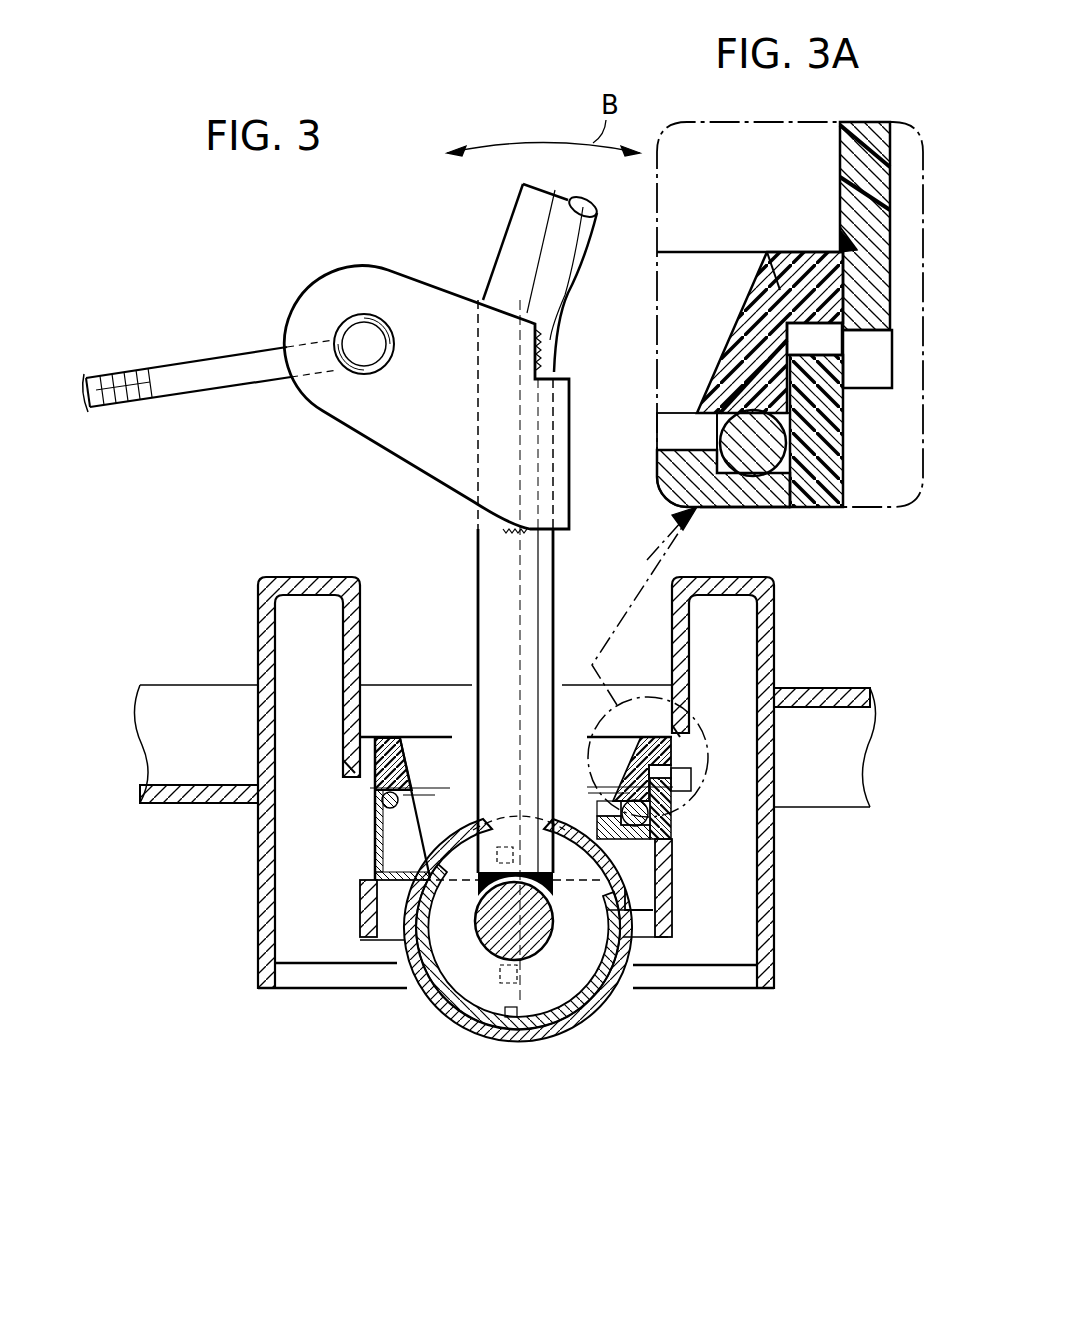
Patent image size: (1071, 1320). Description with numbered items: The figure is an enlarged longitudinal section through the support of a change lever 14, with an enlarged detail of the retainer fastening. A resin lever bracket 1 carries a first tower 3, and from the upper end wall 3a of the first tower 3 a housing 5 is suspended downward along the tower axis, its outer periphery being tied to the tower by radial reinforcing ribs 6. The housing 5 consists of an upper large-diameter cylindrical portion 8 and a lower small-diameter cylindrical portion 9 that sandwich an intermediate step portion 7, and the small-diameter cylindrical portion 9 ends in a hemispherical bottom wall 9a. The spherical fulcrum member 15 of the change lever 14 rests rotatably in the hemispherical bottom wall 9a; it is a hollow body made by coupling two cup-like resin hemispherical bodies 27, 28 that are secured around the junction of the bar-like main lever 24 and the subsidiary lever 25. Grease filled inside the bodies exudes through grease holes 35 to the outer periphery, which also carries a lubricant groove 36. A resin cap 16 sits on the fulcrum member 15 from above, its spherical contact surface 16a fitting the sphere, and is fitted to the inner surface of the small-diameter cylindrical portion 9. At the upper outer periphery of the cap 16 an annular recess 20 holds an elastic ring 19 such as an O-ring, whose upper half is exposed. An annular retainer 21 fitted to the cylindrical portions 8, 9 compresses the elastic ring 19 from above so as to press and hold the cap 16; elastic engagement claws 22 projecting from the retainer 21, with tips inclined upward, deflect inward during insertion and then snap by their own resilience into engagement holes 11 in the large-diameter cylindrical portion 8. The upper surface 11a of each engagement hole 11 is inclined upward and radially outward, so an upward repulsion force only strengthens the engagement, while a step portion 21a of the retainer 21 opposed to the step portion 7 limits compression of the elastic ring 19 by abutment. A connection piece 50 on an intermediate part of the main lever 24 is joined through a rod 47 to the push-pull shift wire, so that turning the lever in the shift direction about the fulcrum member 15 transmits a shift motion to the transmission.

In FIG. 3, the lever bracket 1 is at (826, 688).
In FIG. 3, the first tower 3 is at (762, 925).
In FIG. 3A, the upper end wall 3a is at (720, 560).
In FIG. 3, the housing 5 is at (228, 707).
In FIG. 3A, the housing 5 is at (940, 252).
In FIG. 3, the radial reinforcing ribs 6 is at (318, 948).
In FIG. 3, the step portion 7 is at (375, 770).
In FIG. 3A, the step portion 7 is at (817, 363).
In FIG. 3, the large-diameter cylindrical portion 8 is at (347, 682).
In FIG. 3A, the large-diameter cylindrical portion 8 is at (883, 177).
In FIG. 3, the small-diameter cylindrical portion 9 is at (367, 843).
In FIG. 3A, the small-diameter cylindrical portion 9 is at (833, 480).
In FIG. 3, the hemispherical bottom wall 9a is at (455, 1040).
In FIG. 3, the engagement holes 11 is at (693, 760).
In FIG. 3A, the engagement holes 11 is at (862, 362).
In FIG. 3, the upper surface of engagement hole 11a is at (688, 728).
In FIG. 3A, the upper surface of engagement hole 11a is at (837, 243).
In FIG. 3, the change lever 14 is at (573, 293).
In FIG. 3, the spherical fulcrum member 15 is at (470, 1093).
In FIG. 3, the cap 16 is at (640, 840).
In FIG. 3A, the cap 16 is at (683, 482).
In FIG. 3, the surface of cap 16a is at (655, 912).
In FIG. 3, the elastic ring 19 is at (407, 766).
In FIG. 3A, the elastic ring 19 is at (762, 507).
In FIG. 3, the annular recess 20 is at (394, 808).
In FIG. 3A, the annular recess 20 is at (717, 432).
In FIG. 3, the annular retainer 21 is at (625, 762).
In FIG. 3A, the annular retainer 21 is at (740, 333).
In FIG. 3, the step portion of retainer 21a is at (352, 765).
In FIG. 3A, the step portion of retainer 21a is at (815, 328).
In FIG. 3, the elastic engagement claws 22 is at (687, 747).
In FIG. 3A, the elastic engagement claws 22 is at (845, 345).
In FIG. 3, the main lever 24 is at (560, 617).
In FIG. 3, the subsidiary lever 25 is at (500, 918).
In FIG. 3, the hemispherical body 27 is at (470, 1040).
In FIG. 3, the hemispherical body 28 is at (545, 1045).
In FIG. 3, the grease holes 35 is at (425, 885).
In FIG. 3, the lubricant groove 36 is at (380, 855).
In FIG. 3, the rod 47 is at (195, 365).
In FIG. 3, the connection piece 50 is at (371, 275).